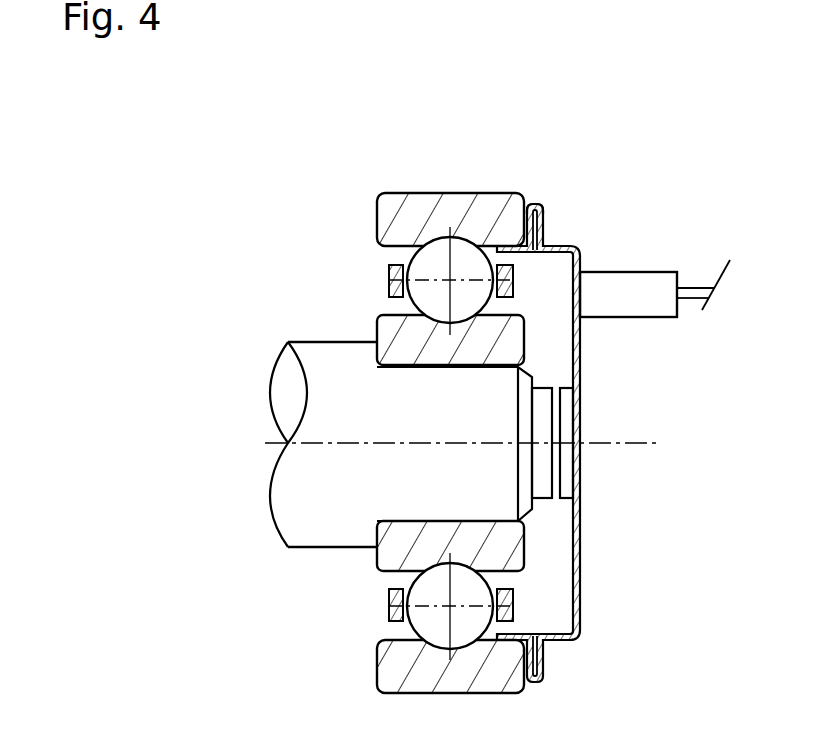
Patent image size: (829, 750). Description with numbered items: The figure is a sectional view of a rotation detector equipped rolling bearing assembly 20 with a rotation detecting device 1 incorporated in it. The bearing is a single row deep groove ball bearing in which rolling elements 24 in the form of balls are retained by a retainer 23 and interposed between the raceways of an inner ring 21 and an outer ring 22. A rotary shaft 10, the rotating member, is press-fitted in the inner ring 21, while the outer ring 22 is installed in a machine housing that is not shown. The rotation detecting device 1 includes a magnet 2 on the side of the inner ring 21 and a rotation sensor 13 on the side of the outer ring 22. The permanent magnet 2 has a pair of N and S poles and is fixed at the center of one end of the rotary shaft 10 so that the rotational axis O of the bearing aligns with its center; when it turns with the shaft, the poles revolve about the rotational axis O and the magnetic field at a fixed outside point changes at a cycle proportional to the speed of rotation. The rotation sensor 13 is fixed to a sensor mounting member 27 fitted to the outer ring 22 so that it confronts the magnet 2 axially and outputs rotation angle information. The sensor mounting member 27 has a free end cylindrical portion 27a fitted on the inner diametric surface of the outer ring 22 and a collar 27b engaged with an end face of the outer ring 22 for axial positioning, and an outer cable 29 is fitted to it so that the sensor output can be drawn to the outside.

The rotation detecting device 1 is at (613, 500).
The magnet 2 is at (543, 500).
The rotation sensor 13 is at (567, 485).
The rotary shaft 10 is at (313, 517).
The rolling bearing assembly 20 is at (369, 398).
The inner ring 21 is at (383, 332).
The outer ring 22 is at (455, 192).
The retainer 23 is at (390, 270).
The rolling elements 24 is at (435, 258).
The sensor mounting member 27 is at (590, 407).
The free end cylindrical portion 27a is at (505, 244).
The collar 27b is at (542, 216).
The outer cable 29 is at (647, 287).
The rotational axis O is at (632, 441).